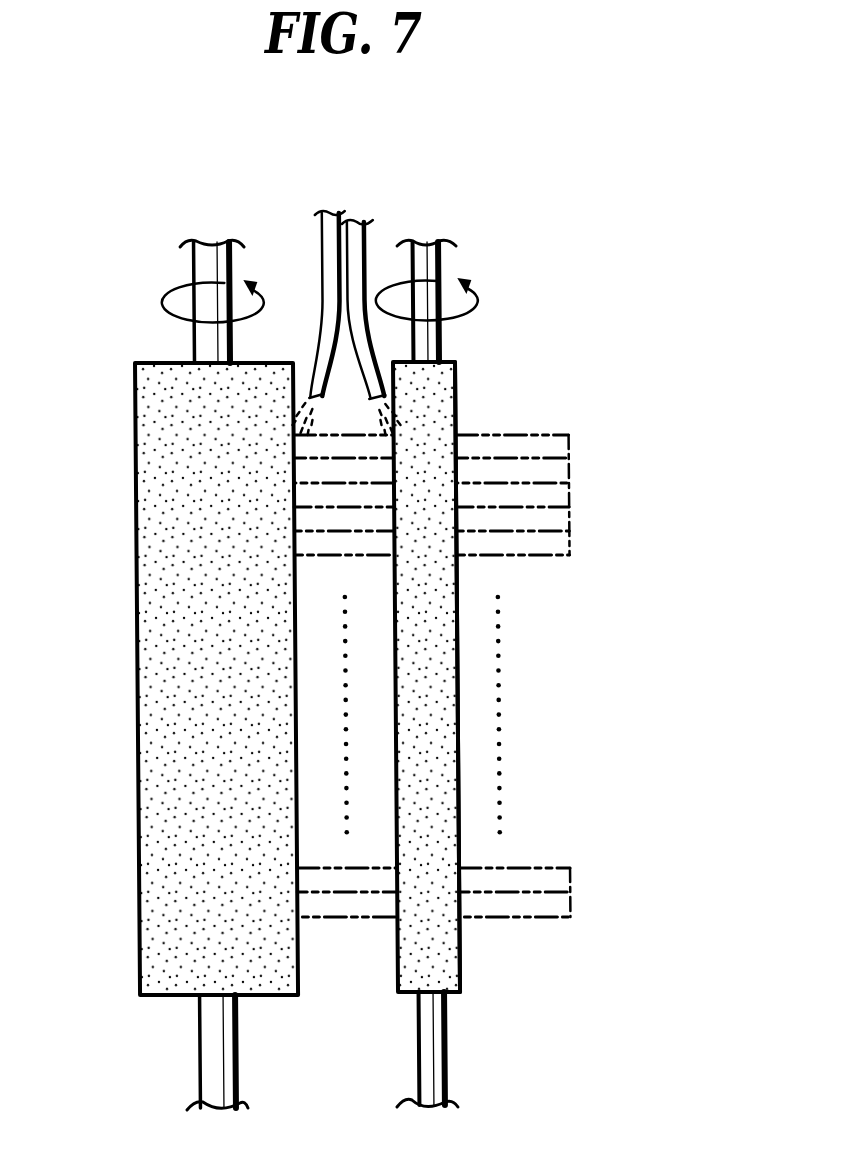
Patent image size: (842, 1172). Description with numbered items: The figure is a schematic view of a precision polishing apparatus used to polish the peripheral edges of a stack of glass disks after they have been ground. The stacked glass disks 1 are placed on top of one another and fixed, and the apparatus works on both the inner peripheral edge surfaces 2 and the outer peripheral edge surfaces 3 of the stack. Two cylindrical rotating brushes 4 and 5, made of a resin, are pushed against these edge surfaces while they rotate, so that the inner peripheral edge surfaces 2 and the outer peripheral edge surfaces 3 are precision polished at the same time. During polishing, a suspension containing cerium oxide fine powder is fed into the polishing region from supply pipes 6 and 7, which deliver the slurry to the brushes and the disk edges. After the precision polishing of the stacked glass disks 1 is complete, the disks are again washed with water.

The stacked glass disks 1 is at (588, 457).
The inner peripheral edge surfaces 2 is at (457, 447).
The outer peripheral edge surfaces 3 is at (567, 541).
The cylindrical rotating brush 4 is at (449, 960).
The cylindrical rotating brush 5 is at (142, 957).
The supply pipe 6 is at (366, 248).
The supply pipe 7 is at (328, 262).